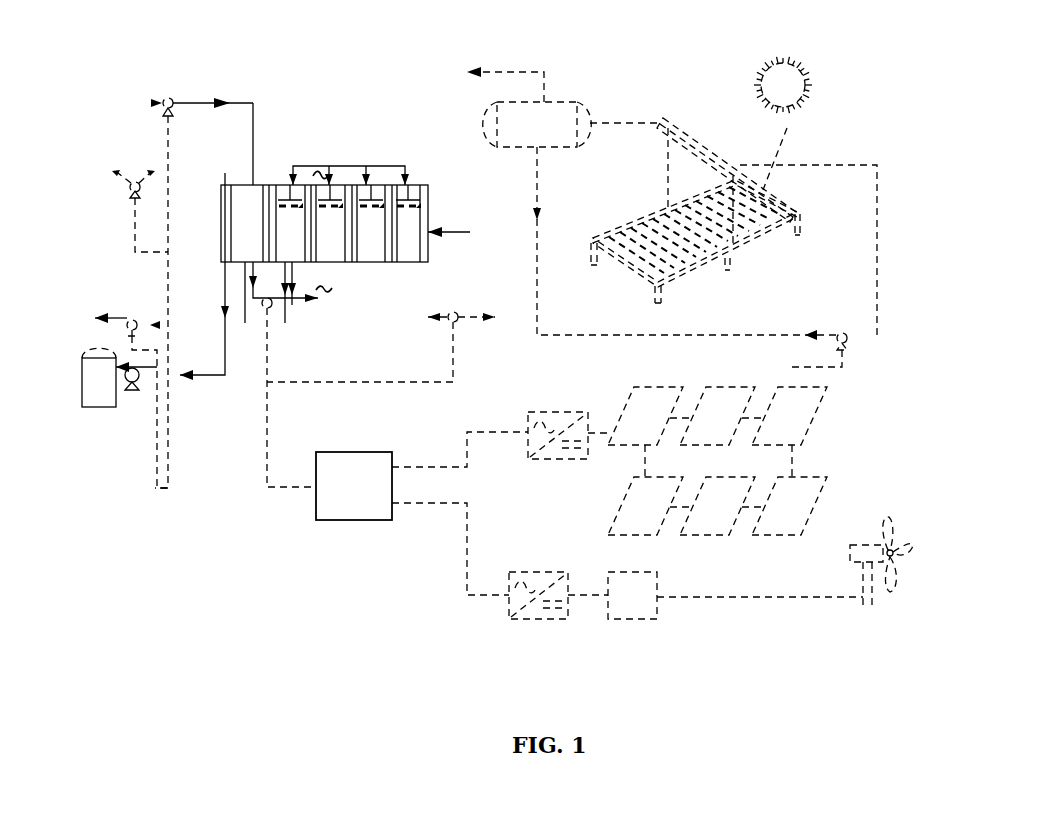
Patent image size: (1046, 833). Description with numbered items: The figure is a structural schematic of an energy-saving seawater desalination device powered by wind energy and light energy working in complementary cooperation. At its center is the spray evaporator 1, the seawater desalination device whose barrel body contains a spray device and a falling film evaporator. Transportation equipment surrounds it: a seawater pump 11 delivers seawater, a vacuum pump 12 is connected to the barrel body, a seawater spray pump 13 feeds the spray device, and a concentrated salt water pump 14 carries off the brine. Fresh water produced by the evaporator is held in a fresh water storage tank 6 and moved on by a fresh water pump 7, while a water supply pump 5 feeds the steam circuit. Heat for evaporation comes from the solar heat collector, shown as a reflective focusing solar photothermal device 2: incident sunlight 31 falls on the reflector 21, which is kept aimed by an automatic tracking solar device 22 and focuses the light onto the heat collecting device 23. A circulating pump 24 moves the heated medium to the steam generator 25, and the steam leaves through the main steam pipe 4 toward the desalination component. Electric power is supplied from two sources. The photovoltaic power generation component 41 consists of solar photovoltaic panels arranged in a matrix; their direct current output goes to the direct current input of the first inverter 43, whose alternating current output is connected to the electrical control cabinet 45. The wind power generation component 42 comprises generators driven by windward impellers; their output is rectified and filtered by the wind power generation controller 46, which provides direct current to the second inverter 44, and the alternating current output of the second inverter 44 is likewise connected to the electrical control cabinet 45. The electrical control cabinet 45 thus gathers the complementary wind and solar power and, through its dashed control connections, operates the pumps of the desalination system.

The spray evaporator 1 is at (294, 196).
The seawater pump 11 is at (165, 100).
The vacuum pump 12 is at (131, 190).
The concentrated salt water pump 14 is at (130, 318).
The fresh water storage tank 6 is at (92, 400).
The fresh water pump 7 is at (132, 390).
The seawater spray pump 13 is at (271, 306).
The water supply pump 5 is at (450, 322).
The electrical control cabinet 45 is at (340, 518).
The main steam pipe 4 is at (512, 72).
The steam generator 25 is at (560, 112).
The heat collecting device 23 is at (693, 130).
The incident sunlight 31 is at (770, 151).
The reflective focusing solar photothermal device 2 is at (800, 238).
The automatic tracking solar device 22 is at (625, 262).
The reflector 21 is at (712, 262).
The circulating pump 24 is at (846, 345).
The photovoltaic power generation component 41 is at (828, 477).
The wind power generation component 42 is at (893, 550).
The first inverter 43 is at (538, 458).
The second inverter 44 is at (527, 617).
The wind power generation controller 46 is at (640, 618).